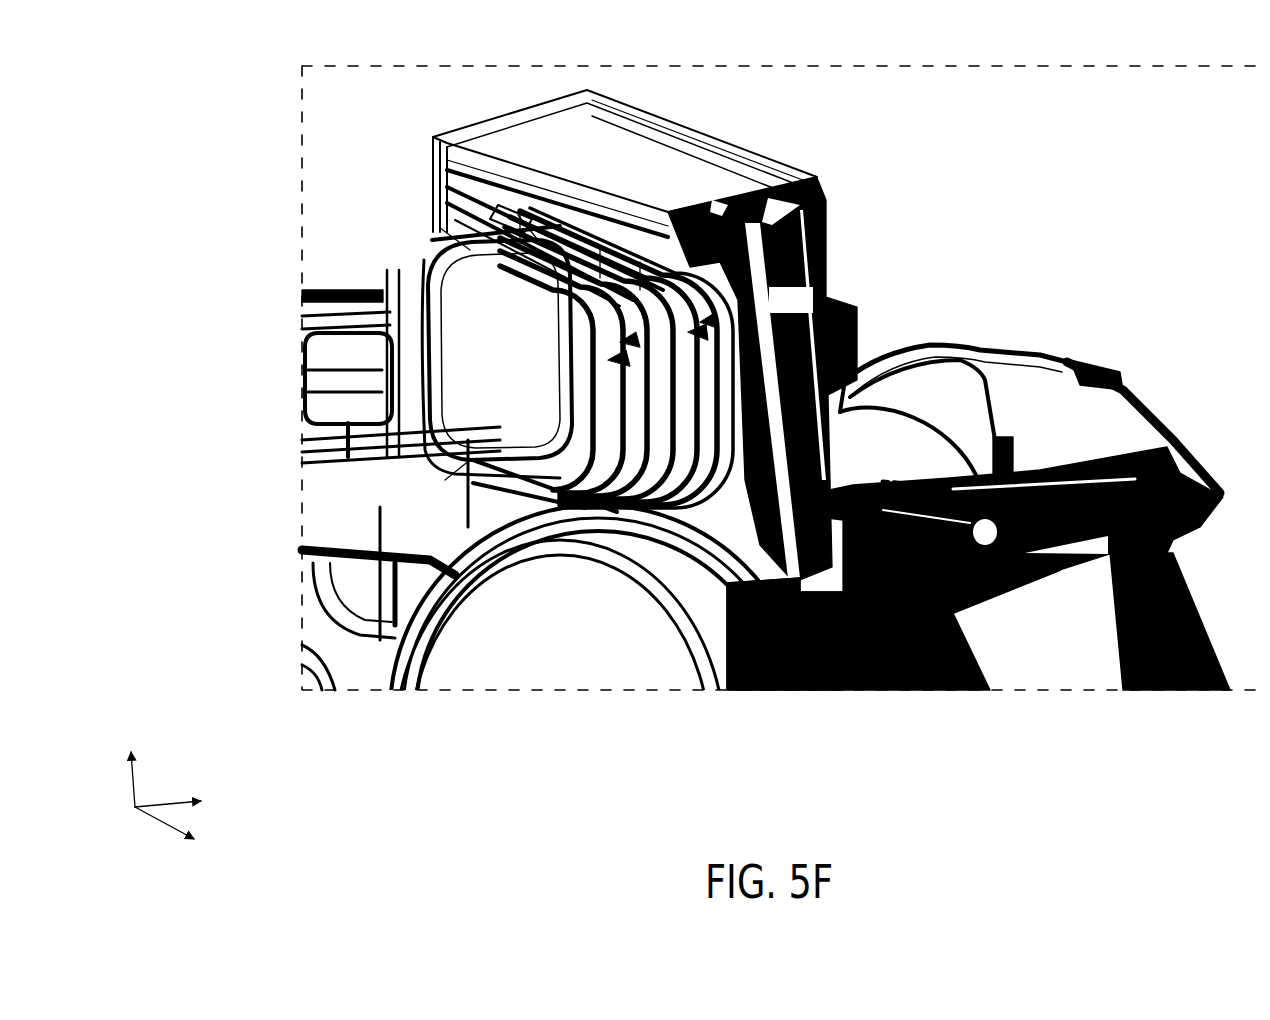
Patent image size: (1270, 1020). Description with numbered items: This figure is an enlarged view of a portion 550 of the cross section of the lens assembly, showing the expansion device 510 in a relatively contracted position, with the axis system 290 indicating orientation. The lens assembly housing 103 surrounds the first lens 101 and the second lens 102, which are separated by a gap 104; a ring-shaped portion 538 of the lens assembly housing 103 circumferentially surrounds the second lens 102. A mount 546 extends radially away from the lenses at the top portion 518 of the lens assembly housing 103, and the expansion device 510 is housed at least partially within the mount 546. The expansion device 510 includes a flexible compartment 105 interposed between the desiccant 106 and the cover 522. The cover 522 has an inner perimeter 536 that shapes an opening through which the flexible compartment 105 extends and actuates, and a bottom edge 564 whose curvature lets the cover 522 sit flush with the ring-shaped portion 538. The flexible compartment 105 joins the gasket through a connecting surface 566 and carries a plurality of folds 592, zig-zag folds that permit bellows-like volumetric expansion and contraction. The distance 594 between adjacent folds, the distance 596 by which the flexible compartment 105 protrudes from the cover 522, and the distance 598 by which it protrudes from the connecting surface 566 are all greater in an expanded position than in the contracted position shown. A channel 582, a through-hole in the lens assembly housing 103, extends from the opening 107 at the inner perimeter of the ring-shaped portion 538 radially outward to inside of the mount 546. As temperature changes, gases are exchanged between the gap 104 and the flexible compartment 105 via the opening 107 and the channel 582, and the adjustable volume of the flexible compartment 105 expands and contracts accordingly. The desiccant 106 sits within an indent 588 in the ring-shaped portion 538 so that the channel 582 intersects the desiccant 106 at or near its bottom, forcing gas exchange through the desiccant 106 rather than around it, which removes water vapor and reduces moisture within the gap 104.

The portion 550 is at (988, 62).
The expansion device 510 is at (425, 106).
The top portion 518 is at (838, 106).
The cover 522 is at (445, 160).
The distance 596 is at (530, 218).
The mount 546 is at (724, 146).
The distance 594 is at (440, 237).
The flexible compartment 105 is at (470, 330).
The inner perimeter 536 is at (705, 300).
The desiccant 106 is at (791, 300).
The lens assembly housing 103 is at (1015, 368).
The plurality of folds 592 is at (673, 450).
The ring-shaped portion 538 is at (400, 658).
The second lens 102 is at (598, 625).
The bottom edge 564 is at (640, 545).
The distance 598 is at (690, 548).
The connecting surface 566 is at (730, 555).
The indent 588 is at (838, 606).
The opening 107 is at (1032, 590).
The channel 582 is at (1030, 556).
The first lens 101 is at (1195, 618).
The gap 104 is at (1068, 642).
The axis system 290 is at (190, 773).